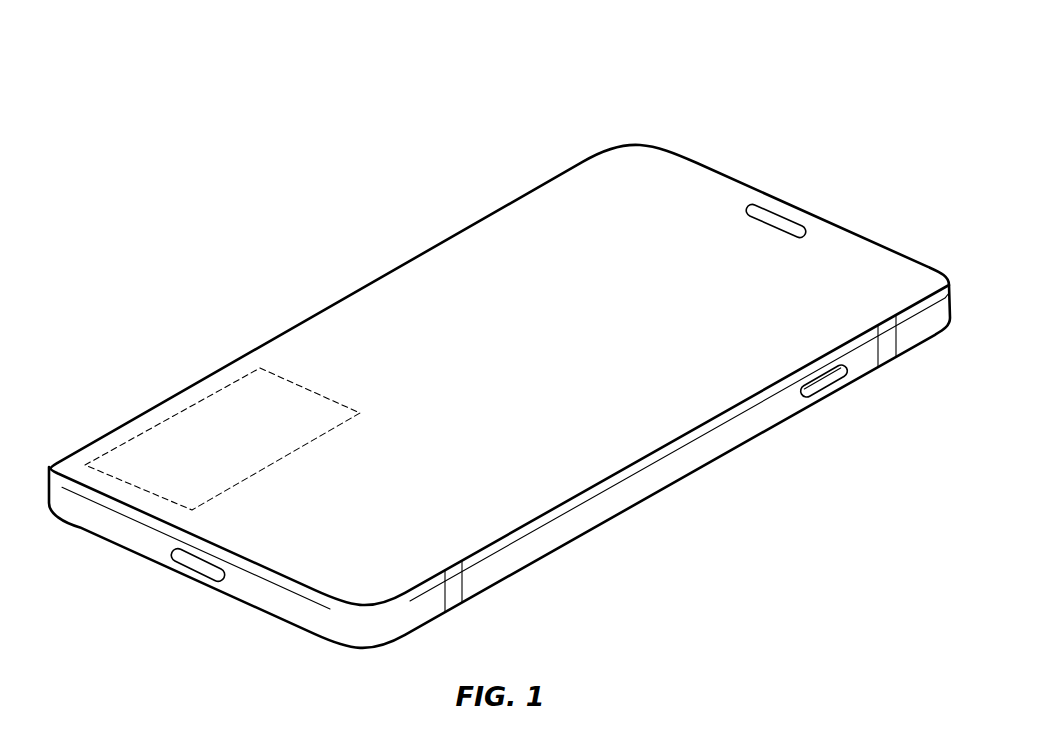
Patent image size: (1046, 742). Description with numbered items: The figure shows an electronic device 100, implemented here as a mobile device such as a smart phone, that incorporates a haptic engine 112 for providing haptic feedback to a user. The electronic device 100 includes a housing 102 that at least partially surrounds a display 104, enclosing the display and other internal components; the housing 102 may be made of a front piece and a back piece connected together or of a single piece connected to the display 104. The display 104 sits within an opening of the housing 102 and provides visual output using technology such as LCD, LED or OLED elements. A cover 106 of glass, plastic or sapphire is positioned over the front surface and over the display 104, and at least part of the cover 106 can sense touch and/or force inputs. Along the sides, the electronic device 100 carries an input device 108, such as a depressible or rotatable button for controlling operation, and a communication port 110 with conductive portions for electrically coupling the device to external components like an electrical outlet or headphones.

The electronic device 100 is at (313, 63).
The housing 102 is at (927, 348).
The display 104 is at (772, 390).
The cover 106 is at (495, 248).
The input device 108 is at (830, 391).
The communication port 110 is at (190, 574).
The haptic engine 112 is at (200, 400).